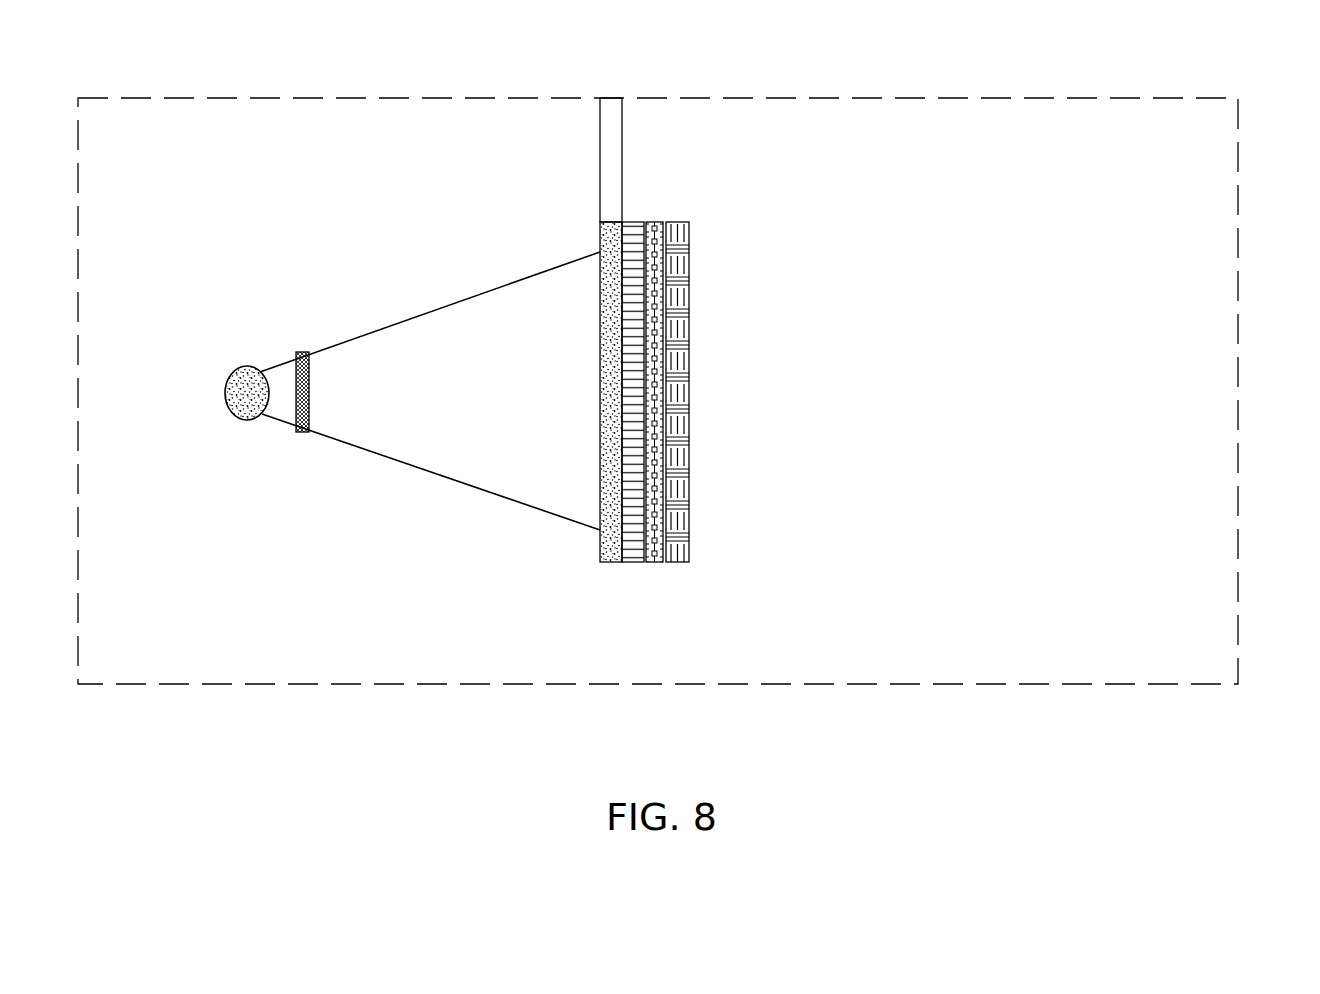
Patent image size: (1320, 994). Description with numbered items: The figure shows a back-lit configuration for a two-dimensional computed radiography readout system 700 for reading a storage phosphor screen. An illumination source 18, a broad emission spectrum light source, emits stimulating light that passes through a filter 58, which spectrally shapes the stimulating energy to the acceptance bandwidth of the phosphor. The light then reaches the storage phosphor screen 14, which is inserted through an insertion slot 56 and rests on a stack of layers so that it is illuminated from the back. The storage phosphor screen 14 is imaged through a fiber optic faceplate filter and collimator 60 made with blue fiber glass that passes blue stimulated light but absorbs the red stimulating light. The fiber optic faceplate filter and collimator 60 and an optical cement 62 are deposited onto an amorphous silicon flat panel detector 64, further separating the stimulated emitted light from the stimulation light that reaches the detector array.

The two-dimensional CR readout system 700 is at (1178, 95).
The insertion slot 56 is at (620, 138).
The storage phosphor screen 14 is at (603, 551).
The fiber optic faceplate filter and collimator 60 is at (633, 560).
The optical cement 62 is at (658, 560).
The amorphous silicon flat panel detector 64 is at (683, 553).
The illumination source 18 is at (246, 366).
The filter 58 is at (302, 351).